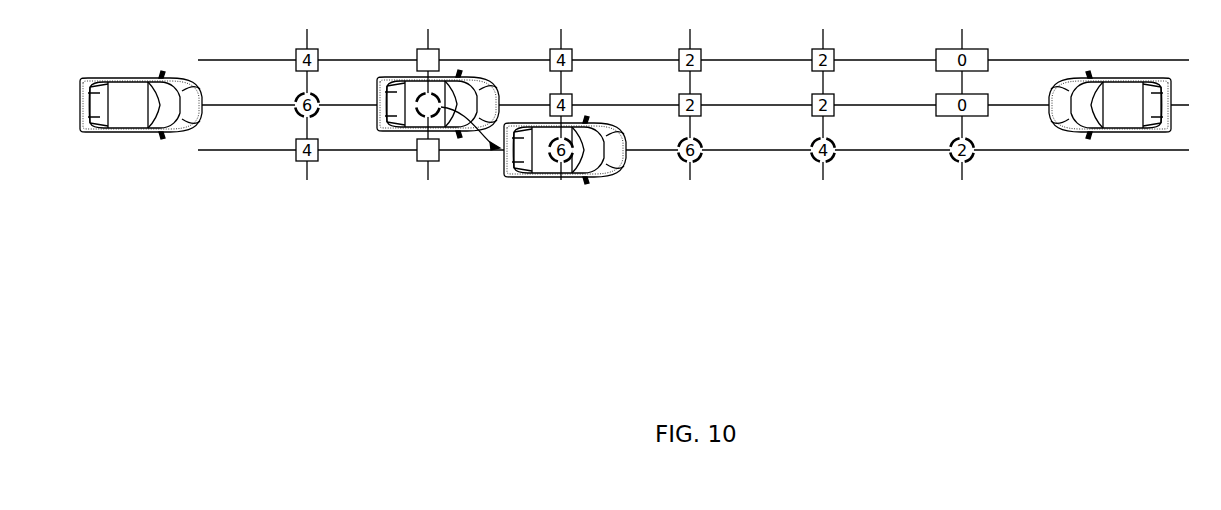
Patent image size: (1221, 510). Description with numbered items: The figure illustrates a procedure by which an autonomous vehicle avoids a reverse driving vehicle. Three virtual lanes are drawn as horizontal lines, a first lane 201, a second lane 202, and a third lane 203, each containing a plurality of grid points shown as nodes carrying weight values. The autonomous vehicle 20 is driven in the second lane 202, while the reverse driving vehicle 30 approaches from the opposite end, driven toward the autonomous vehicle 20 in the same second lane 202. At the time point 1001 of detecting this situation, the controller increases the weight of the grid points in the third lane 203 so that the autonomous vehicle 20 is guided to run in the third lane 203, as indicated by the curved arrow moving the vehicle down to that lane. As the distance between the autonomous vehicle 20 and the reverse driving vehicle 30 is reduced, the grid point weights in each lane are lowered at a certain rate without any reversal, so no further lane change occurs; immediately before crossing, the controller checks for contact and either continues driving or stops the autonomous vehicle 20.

The autonomous vehicle 20 is at (132, 78).
The reverse driving vehicle 30 is at (1121, 78).
The first lane 201 is at (861, 57).
The second lane 202 is at (906, 103).
The third lane 203 is at (893, 152).
The time point 1001 is at (424, 174).